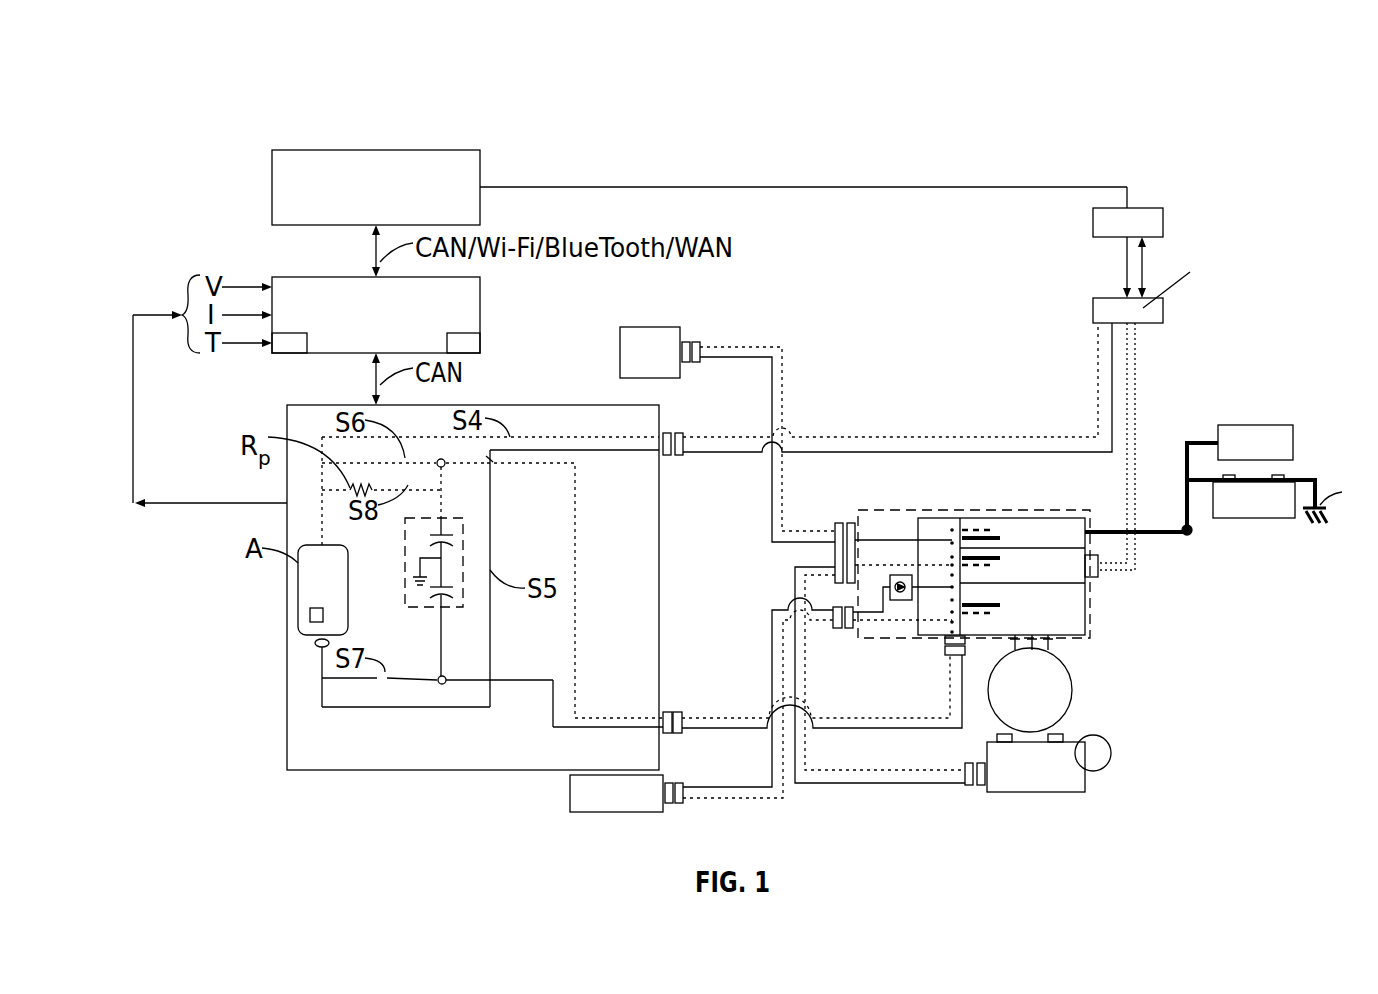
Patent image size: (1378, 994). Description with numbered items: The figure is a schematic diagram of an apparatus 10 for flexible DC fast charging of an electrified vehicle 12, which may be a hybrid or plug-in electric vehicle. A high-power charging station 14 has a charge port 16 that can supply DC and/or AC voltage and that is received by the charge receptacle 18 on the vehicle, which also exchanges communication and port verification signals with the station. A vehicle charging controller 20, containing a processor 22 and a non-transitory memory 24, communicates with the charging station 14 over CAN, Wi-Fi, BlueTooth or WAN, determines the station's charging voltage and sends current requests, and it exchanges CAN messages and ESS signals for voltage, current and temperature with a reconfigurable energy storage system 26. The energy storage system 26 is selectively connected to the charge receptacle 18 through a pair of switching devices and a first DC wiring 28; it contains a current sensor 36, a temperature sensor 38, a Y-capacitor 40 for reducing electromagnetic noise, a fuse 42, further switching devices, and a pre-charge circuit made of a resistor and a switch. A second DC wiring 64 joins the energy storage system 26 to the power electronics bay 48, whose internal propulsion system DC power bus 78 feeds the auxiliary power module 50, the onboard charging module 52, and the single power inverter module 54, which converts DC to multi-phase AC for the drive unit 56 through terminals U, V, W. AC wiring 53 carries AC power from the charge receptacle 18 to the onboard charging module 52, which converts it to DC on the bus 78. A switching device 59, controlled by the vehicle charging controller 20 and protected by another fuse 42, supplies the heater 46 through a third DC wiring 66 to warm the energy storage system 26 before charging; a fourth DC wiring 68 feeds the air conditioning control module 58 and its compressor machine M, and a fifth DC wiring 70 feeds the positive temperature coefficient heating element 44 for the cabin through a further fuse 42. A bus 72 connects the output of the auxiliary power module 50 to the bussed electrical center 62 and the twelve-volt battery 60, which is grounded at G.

The apparatus 10 is at (116, 366).
The electrified vehicle 12 is at (188, 101).
The charging station 14 is at (307, 150).
The charge port 16 is at (1150, 208).
The charge receptacle 18 is at (1163, 315).
The vehicle charging controller 20 is at (307, 277).
The processor 22 is at (465, 353).
The non-transitory memory 24 is at (288, 353).
The reconfigurable energy storage system 26 is at (290, 621).
The first DC wiring 28 is at (870, 436).
The current sensor 36 is at (316, 645).
The temperature sensor 38 is at (310, 615).
The Y-capacitor 40 is at (430, 607).
The fuse 42 is at (322, 515).
The positive temperature coefficient heating element 44 is at (663, 327).
The heater 46 is at (600, 812).
The power electronics bay 48 is at (915, 510).
The auxiliary power module 50 is at (1060, 510).
The onboard charging module 52 is at (1085, 585).
The AC wiring 53 is at (1137, 385).
The single power inverter module 54 is at (1075, 640).
The drive unit 56 is at (1072, 690).
The air conditioning control module 58 is at (1040, 792).
The switching device 59 is at (900, 600).
The 12-volt battery 60 is at (1263, 518).
The bussed electrical center 62 is at (1262, 425).
The second DC wiring 64 is at (708, 718).
The third DC wiring 66 is at (733, 802).
The fourth DC wiring 68 is at (898, 785).
The fifth DC wiring 70 is at (762, 347).
The bus 72 is at (1155, 535).
The propulsion system DC power bus 78 is at (953, 528).